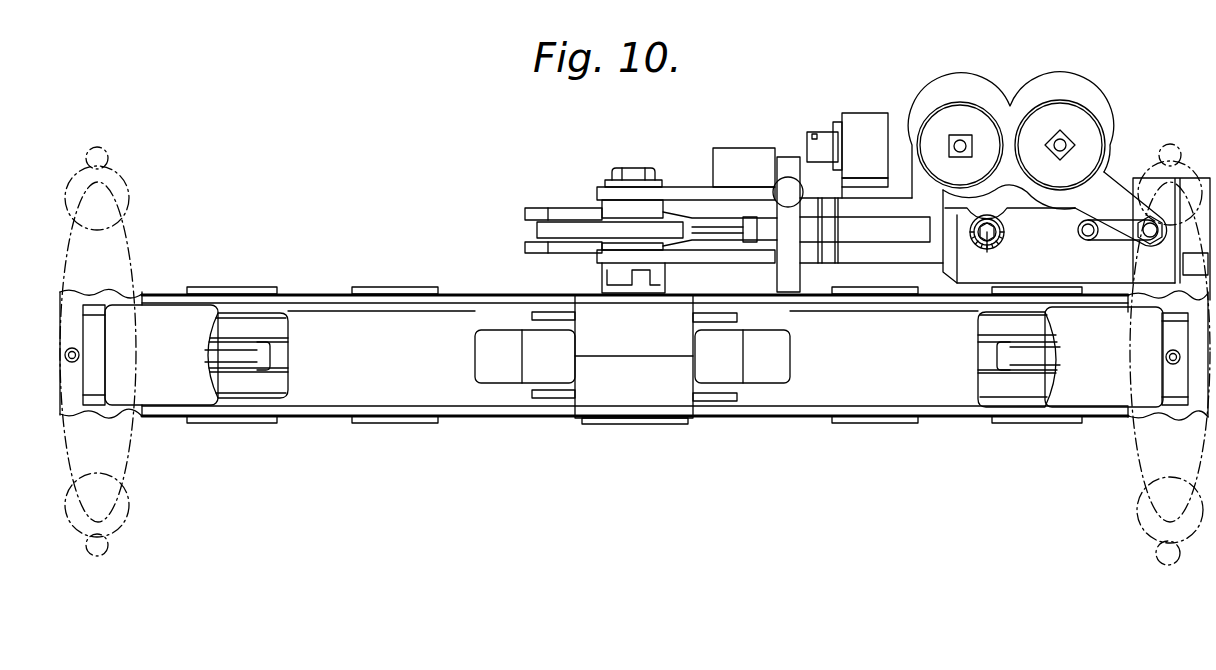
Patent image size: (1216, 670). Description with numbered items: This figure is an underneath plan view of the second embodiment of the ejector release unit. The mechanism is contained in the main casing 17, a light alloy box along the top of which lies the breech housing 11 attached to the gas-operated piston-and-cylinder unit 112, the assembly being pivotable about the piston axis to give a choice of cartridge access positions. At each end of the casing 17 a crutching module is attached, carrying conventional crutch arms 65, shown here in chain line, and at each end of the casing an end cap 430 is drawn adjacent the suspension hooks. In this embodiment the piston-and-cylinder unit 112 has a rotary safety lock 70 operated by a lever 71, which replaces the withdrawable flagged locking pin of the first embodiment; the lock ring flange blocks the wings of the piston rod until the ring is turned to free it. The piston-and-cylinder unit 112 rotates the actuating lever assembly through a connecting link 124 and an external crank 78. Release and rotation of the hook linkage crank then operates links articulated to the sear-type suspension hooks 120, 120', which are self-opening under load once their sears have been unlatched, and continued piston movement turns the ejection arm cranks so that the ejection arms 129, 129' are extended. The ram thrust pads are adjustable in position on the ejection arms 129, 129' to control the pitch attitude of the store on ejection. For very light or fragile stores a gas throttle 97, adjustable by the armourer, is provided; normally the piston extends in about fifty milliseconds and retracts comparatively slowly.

The breech housing 11 is at (1093, 104).
The main casing 17 is at (484, 302).
The crutch arms 65 is at (122, 248).
The rotary safety lock 70 is at (788, 284).
The lever 71 is at (788, 178).
The external crank 78 is at (582, 208).
The gas throttle 97 is at (1005, 236).
The gas-operated piston-and-cylinder unit 112 is at (1128, 200).
The suspension hook 120 is at (246, 326).
The suspension hook 120' is at (999, 386).
The connecting link 124 is at (692, 225).
The ejection arm 129 is at (381, 391).
The ejection arm 129' is at (884, 386).
The end cap 430 is at (160, 378).